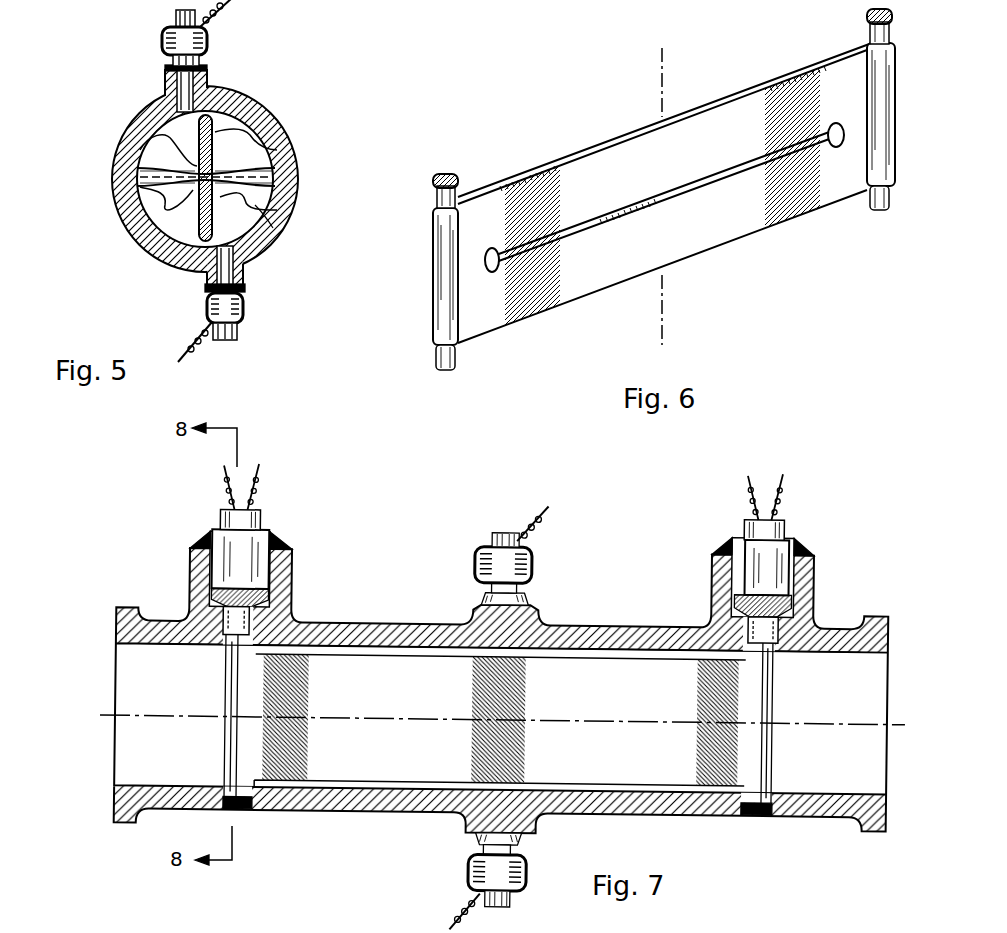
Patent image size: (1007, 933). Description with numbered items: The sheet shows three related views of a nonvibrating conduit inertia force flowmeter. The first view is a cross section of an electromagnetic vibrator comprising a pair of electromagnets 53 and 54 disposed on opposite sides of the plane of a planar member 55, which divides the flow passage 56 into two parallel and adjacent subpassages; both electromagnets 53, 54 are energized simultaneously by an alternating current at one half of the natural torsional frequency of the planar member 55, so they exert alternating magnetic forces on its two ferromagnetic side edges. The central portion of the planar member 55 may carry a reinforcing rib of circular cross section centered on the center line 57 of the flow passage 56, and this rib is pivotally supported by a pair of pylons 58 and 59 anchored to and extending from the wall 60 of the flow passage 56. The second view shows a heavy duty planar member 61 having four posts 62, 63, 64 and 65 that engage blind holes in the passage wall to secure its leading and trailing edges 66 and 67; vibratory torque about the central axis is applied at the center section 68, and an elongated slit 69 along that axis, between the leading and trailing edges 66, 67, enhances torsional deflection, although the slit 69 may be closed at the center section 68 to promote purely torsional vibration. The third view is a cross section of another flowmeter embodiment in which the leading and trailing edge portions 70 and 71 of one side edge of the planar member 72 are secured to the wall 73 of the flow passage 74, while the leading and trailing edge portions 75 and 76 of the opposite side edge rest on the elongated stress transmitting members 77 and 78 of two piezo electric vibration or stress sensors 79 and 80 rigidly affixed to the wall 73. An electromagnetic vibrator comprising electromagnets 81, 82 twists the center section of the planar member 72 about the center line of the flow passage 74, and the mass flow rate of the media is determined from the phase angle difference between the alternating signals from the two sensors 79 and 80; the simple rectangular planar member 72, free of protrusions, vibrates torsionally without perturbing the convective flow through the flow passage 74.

In FIG. 5, the electromagnet 53 is at (210, 38).
In FIG. 5, the electromagnet 54 is at (206, 306).
In FIG. 5, the planar member 55 is at (214, 120).
In FIG. 5, the flow passage 56 is at (160, 250).
In FIG. 5, the center line 57 is at (142, 152).
In FIG. 5, the pylon 58 is at (152, 203).
In FIG. 5, the pylon 59 is at (252, 167).
In FIG. 5, the wall 60 is at (270, 225).
In FIG. 6, the heavy duty planar member 61 is at (703, 263).
In FIG. 6, the post 62 is at (458, 176).
In FIG. 6, the post 63 is at (452, 368).
In FIG. 6, the post 64 is at (867, 15).
In FIG. 6, the post 65 is at (878, 212).
In FIG. 6, the leading edge 66 is at (433, 270).
In FIG. 6, the trailing edge 67 is at (895, 118).
In FIG. 6, the center section 68 is at (660, 70).
In FIG. 6, the elongated slit 69 is at (727, 170).
In FIG. 7, the leading edge portion 70 is at (240, 765).
In FIG. 7, the trailing edge portion 71 is at (755, 790).
In FIG. 7, the planar member 72 is at (370, 755).
In FIG. 7, the wall 73 is at (152, 778).
In FIG. 7, the flow passage 74 is at (168, 678).
In FIG. 7, the leading edge portion 75 is at (262, 650).
In FIG. 7, the trailing edge portion 76 is at (790, 666).
In FIG. 7, the elongated stress transmitting member 77 is at (190, 617).
In FIG. 7, the elongated stress transmitting member 78 is at (735, 628).
In FIG. 7, the piezo electric vibration or stress sensor 79 is at (262, 518).
In FIG. 7, the piezo electric vibration or stress sensor 80 is at (785, 528).
In FIG. 7, the electromagnet 81 is at (475, 565).
In FIG. 7, the electromagnet 82 is at (470, 872).